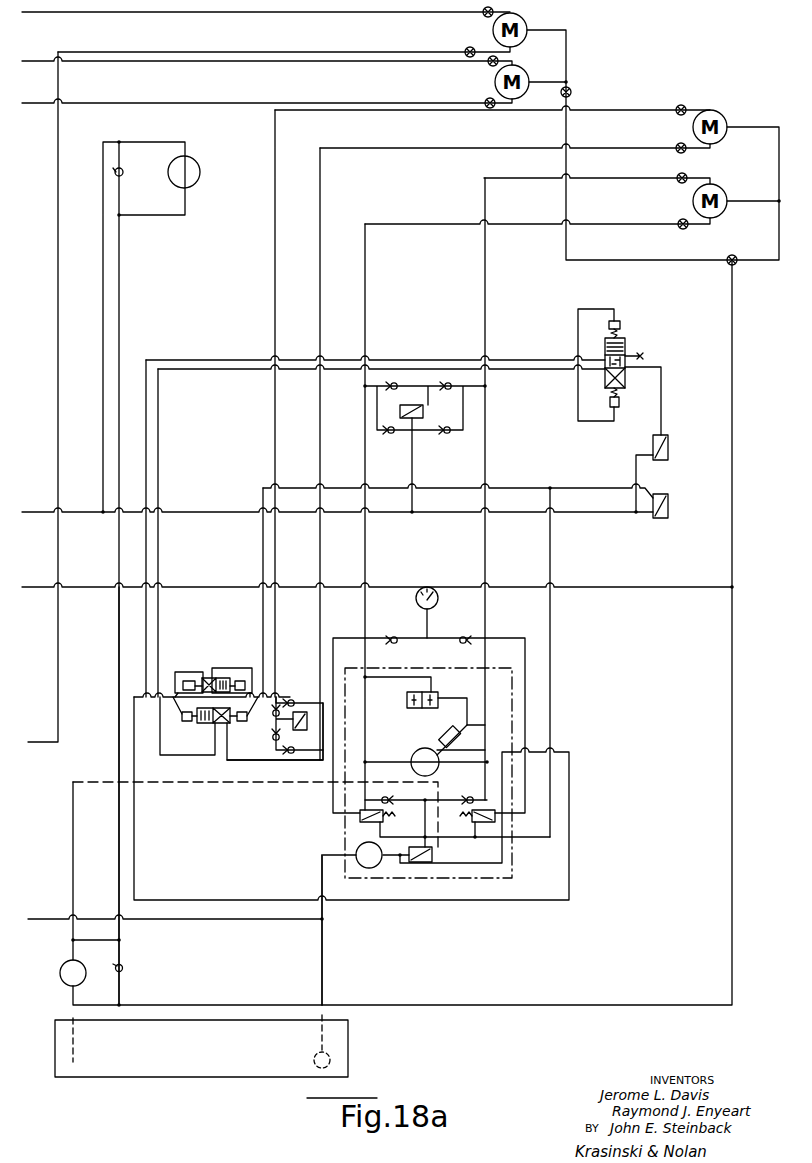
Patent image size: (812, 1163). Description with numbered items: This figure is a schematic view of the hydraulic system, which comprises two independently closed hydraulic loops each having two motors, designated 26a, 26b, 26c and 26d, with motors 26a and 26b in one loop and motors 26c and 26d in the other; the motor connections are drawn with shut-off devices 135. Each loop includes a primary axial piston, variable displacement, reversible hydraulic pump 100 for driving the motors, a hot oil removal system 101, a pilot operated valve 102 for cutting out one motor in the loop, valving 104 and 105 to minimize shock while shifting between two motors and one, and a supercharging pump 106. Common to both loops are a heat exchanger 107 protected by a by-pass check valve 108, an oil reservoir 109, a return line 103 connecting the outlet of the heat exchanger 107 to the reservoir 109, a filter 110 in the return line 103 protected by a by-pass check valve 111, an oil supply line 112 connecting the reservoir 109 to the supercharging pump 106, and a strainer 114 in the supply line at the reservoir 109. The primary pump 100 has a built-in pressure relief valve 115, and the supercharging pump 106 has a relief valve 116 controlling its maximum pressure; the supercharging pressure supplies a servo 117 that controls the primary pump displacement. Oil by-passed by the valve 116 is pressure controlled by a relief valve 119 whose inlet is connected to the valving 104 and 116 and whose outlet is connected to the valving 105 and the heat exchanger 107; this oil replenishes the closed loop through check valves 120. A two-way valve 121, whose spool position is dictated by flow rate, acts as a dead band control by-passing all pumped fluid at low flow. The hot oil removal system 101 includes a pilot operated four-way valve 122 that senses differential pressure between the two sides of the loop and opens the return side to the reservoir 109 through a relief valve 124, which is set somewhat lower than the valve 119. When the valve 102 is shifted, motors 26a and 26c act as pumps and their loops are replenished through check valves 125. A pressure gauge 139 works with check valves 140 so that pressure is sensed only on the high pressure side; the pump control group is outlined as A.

The hydraulic motor 26a is at (527, 23).
The hydraulic motor 26b is at (522, 73).
The hydraulic motor 26c is at (722, 115).
The hydraulic motor 26d is at (722, 186).
The shut-off valve 135 is at (467, 49).
The heat exchanger 107 is at (200, 168).
The by-pass check valve 108 is at (122, 176).
The pilot operated four-way valve 122 is at (627, 343).
The hot oil removal system 101 is at (677, 398).
The relief valve 124 is at (668, 447).
The relief valve 119 is at (668, 503).
The valving 105 is at (414, 420).
The return line 103 is at (118, 640).
The valving 102 is at (218, 664).
The check valves 125 is at (276, 731).
The valving 104 is at (300, 762).
The pressure gauge 139 is at (438, 602).
The check valves 140 is at (462, 644).
The control unit A is at (520, 693).
The two-way valve 121 is at (408, 700).
The servo 117 is at (445, 743).
The primary hydraulic pump 100 is at (414, 757).
The check valves 120 is at (466, 785).
The pressure relief valve 115 is at (360, 817).
The relief valve 116 is at (420, 863).
The supercharging pump 106 is at (378, 865).
The filter 110 is at (60, 972).
The by-pass check valve 111 is at (122, 965).
The oil supply line 112 is at (323, 960).
The strainer 114 is at (330, 1056).
The oil reservoir 109 is at (215, 1077).